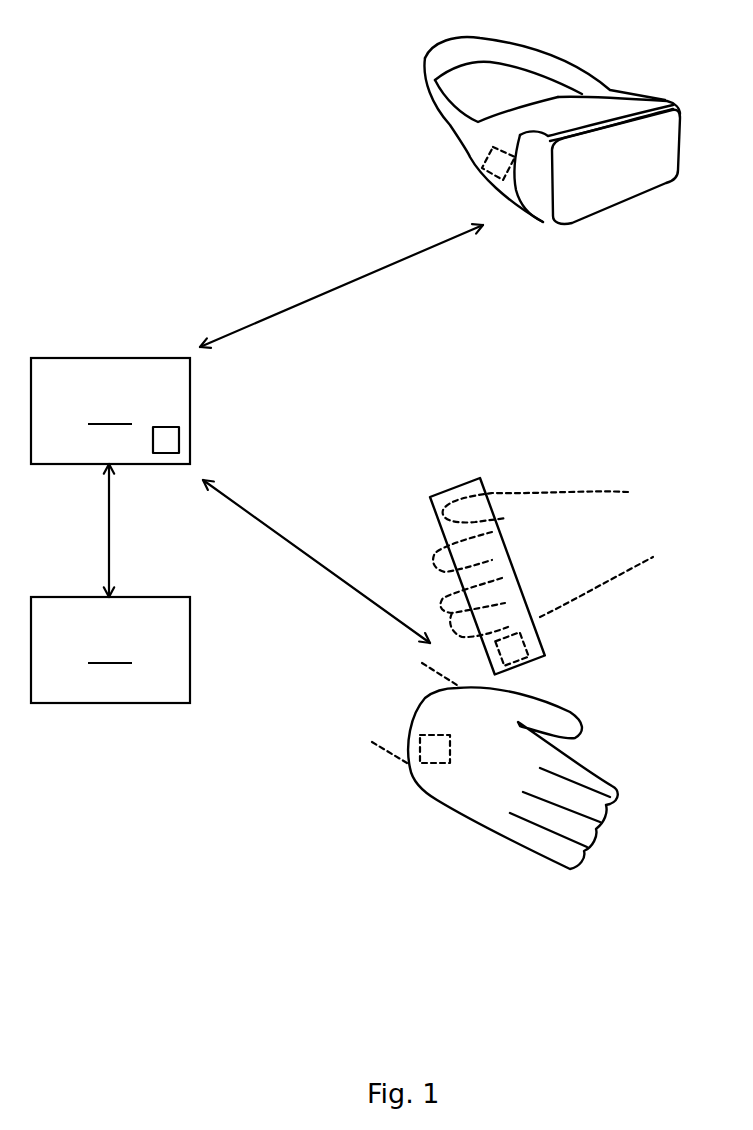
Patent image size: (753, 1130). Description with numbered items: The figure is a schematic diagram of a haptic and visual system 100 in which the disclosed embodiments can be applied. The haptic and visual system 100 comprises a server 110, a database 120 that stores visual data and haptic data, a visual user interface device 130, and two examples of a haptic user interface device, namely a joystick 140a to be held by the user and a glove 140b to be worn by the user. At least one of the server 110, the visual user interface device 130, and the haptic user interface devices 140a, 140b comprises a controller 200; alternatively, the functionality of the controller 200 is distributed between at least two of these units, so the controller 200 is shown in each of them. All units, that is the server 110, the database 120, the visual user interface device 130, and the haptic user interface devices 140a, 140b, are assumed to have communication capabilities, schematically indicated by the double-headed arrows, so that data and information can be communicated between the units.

The haptic and visual system 100 is at (242, 92).
The server 110 is at (110, 411).
The database 120 is at (110, 650).
The visual user interface device 130 is at (628, 105).
The haptic user interface device 140a is at (453, 487).
The haptic user interface device 140b is at (438, 798).
The controller 200 is at (472, 158).